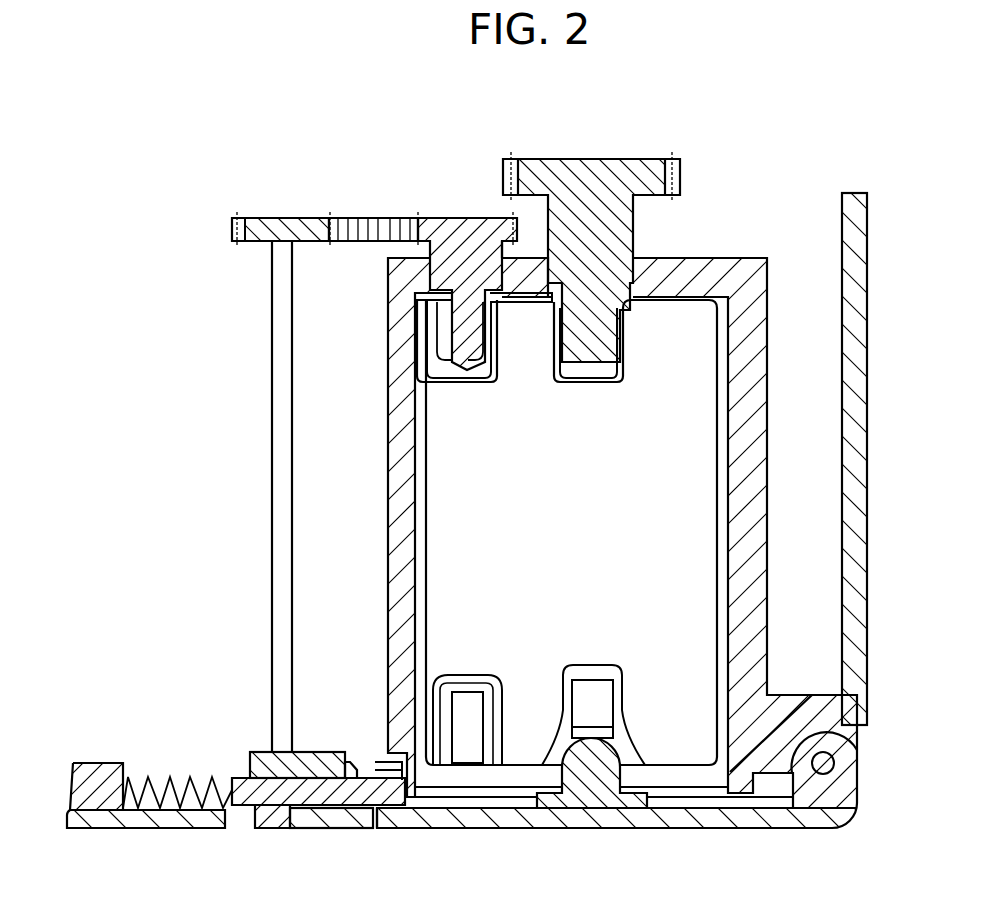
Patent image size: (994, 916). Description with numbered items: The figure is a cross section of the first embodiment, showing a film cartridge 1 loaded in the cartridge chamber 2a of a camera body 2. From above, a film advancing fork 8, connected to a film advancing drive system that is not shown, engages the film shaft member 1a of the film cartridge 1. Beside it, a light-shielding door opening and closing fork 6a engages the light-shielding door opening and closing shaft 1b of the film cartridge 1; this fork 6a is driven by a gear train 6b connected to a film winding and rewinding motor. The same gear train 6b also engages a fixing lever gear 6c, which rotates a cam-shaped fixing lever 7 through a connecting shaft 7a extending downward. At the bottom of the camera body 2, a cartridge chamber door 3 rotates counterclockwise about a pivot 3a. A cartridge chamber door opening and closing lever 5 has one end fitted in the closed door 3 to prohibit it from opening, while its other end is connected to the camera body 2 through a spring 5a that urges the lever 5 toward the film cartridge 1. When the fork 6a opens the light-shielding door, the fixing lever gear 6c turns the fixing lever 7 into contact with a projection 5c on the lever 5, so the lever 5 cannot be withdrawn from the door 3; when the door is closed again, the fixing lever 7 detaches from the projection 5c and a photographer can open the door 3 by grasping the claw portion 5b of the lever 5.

The film cartridge 1 is at (683, 753).
The film shaft member 1a is at (625, 330).
The light-shielding door opening and closing shaft 1b is at (457, 370).
The camera body 2 is at (697, 267).
The cartridge chamber 2a is at (723, 318).
The cartridge chamber door 3 is at (565, 813).
The pivot 3a is at (835, 763).
The cartridge chamber door opening and closing lever 5 is at (243, 795).
The spring 5a is at (170, 777).
The claw portion 5b is at (270, 813).
The projection 5c is at (350, 763).
The light-shielding door opening and closing fork 6a is at (458, 227).
The gear train 6b is at (373, 217).
The fixing lever gear 6c is at (278, 223).
The fixing lever 7 is at (258, 755).
The connecting shaft 7a is at (283, 333).
The film advancing fork 8 is at (583, 172).